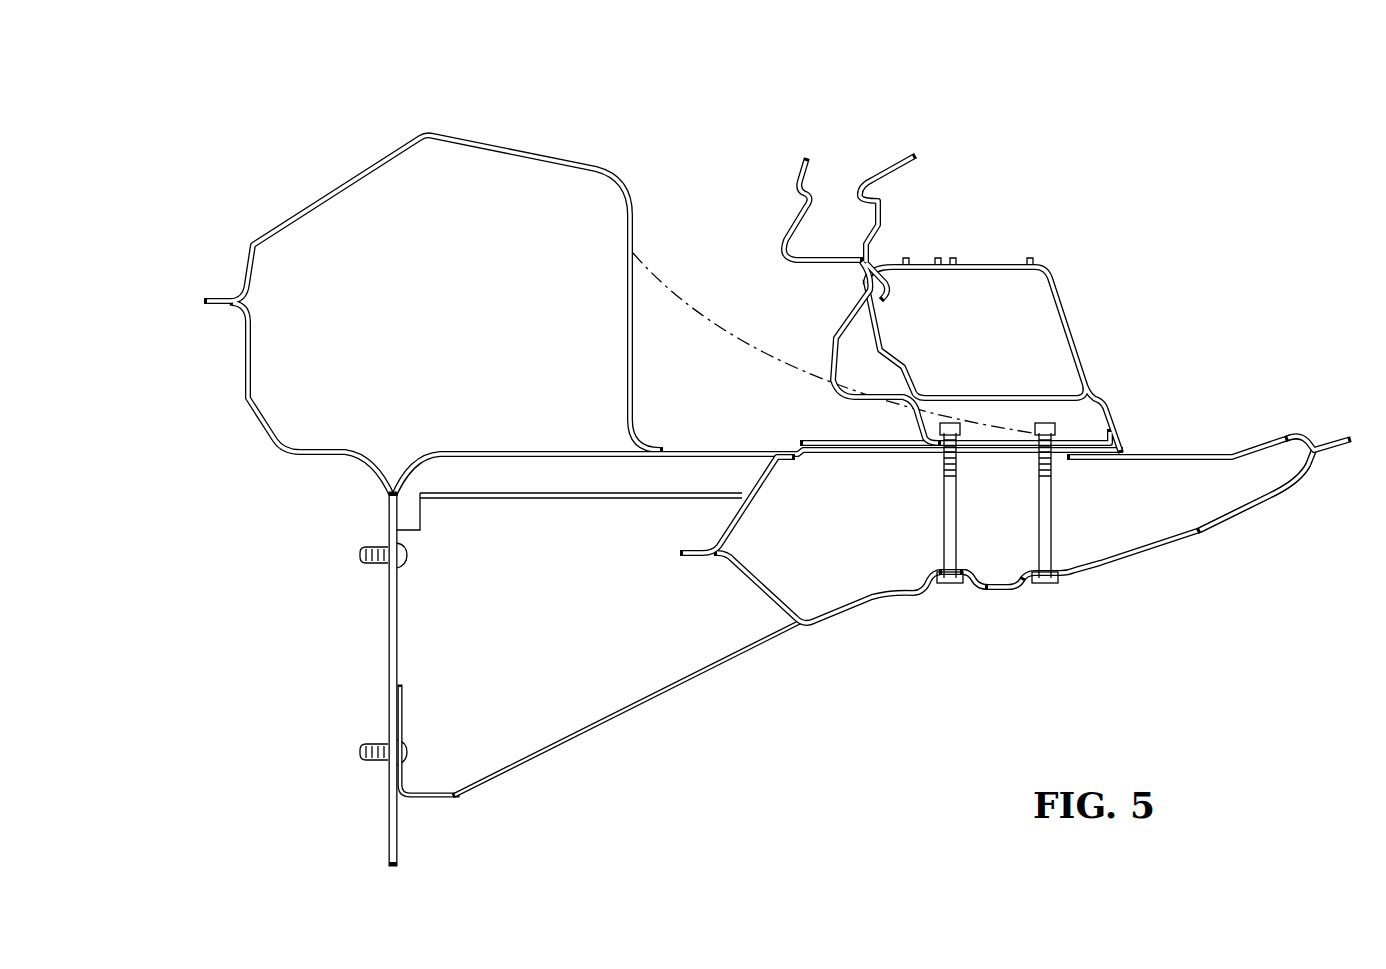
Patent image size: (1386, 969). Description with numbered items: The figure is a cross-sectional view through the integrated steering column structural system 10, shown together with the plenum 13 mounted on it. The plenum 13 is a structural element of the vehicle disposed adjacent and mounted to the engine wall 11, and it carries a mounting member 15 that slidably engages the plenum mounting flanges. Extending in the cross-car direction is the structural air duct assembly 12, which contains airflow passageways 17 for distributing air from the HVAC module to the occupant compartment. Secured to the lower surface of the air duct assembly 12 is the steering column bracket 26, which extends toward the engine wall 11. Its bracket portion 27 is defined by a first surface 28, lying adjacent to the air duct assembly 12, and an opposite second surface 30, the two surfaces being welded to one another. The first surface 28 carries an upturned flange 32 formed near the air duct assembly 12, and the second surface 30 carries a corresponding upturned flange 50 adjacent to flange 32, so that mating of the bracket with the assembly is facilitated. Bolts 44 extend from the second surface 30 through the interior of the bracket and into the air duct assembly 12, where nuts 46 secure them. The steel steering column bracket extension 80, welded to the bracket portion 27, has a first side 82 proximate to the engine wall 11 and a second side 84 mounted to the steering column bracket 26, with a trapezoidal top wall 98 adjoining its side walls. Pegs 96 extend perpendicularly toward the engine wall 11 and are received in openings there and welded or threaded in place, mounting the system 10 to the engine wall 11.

The integrated steering column structural system 10 is at (236, 160).
The engine wall 11 is at (388, 657).
The structural air duct assembly 12 is at (920, 258).
The plenum 13 is at (505, 148).
The mounting member 15 is at (725, 446).
The airflow passageways 17 is at (975, 305).
The steering column bracket 26 is at (1199, 535).
The bracket portion 27 is at (970, 577).
The first surface 28 is at (1170, 457).
The second surface 30 is at (1008, 585).
The flange 32 is at (1273, 450).
The bolts 44 is at (938, 577).
The nuts 46 is at (1057, 427).
The flange 50 is at (1277, 493).
The steering column bracket extension 80 is at (577, 738).
The first side 82 is at (400, 687).
The second side 84 is at (745, 653).
The pegs 96 is at (370, 563).
The top wall 98 is at (583, 500).